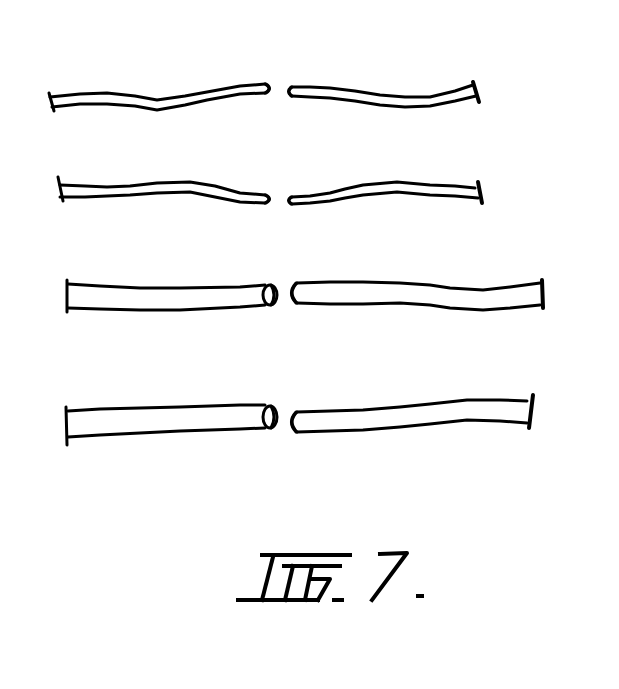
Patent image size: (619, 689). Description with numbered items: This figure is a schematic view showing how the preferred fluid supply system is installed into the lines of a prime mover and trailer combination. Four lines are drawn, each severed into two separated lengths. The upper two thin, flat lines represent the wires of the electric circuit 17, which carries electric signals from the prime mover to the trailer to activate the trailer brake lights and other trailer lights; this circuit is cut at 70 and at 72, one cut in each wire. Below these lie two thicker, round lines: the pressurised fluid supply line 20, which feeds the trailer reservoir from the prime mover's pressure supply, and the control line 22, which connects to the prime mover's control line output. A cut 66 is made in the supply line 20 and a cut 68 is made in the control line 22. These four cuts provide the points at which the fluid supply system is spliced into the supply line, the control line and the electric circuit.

The electric circuit 17 is at (461, 96).
The cut in electric circuit 70 is at (287, 78).
The cut in electric circuit 72 is at (291, 178).
The pressurised fluid supply line 20 is at (478, 300).
The cut in supply line 66 is at (281, 272).
The control line 22 is at (493, 413).
The cut in control line 68 is at (288, 403).